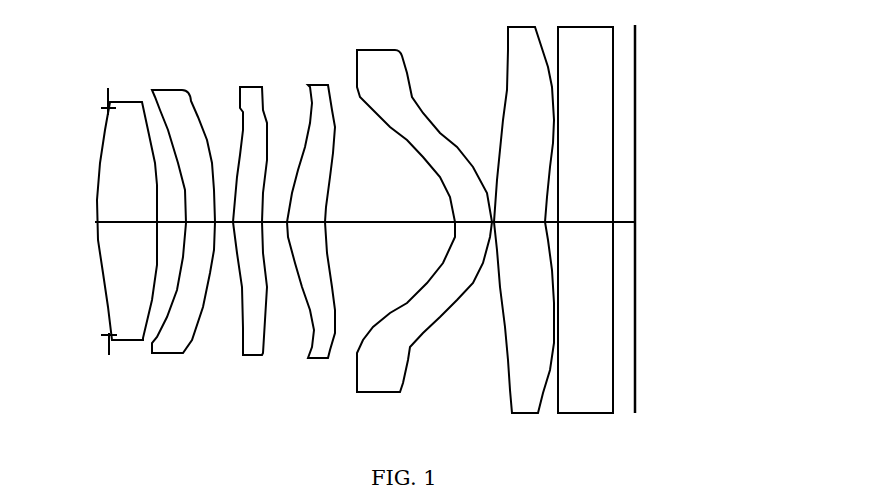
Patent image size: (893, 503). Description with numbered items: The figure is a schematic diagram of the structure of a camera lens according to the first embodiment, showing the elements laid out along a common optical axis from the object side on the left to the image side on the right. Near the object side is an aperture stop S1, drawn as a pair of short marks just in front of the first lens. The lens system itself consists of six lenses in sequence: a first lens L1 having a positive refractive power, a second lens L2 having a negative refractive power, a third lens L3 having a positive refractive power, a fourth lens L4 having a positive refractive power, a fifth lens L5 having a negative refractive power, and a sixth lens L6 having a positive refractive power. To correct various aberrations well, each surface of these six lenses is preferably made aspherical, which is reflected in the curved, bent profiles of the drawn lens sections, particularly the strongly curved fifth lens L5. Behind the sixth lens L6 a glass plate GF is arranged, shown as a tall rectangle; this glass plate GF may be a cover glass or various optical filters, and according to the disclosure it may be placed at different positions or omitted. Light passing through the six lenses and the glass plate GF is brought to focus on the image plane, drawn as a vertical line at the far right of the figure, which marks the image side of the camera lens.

The aperture stop S1 is at (100, 92).
The first lens L1 is at (127, 221).
The second lens L2 is at (183, 221).
The third lens L3 is at (250, 221).
The fourth lens L4 is at (311, 221).
The fifth lens L5 is at (424, 221).
The sixth lens L6 is at (524, 220).
The glass plate GF is at (585, 220).
The element image plane is at (647, 89).